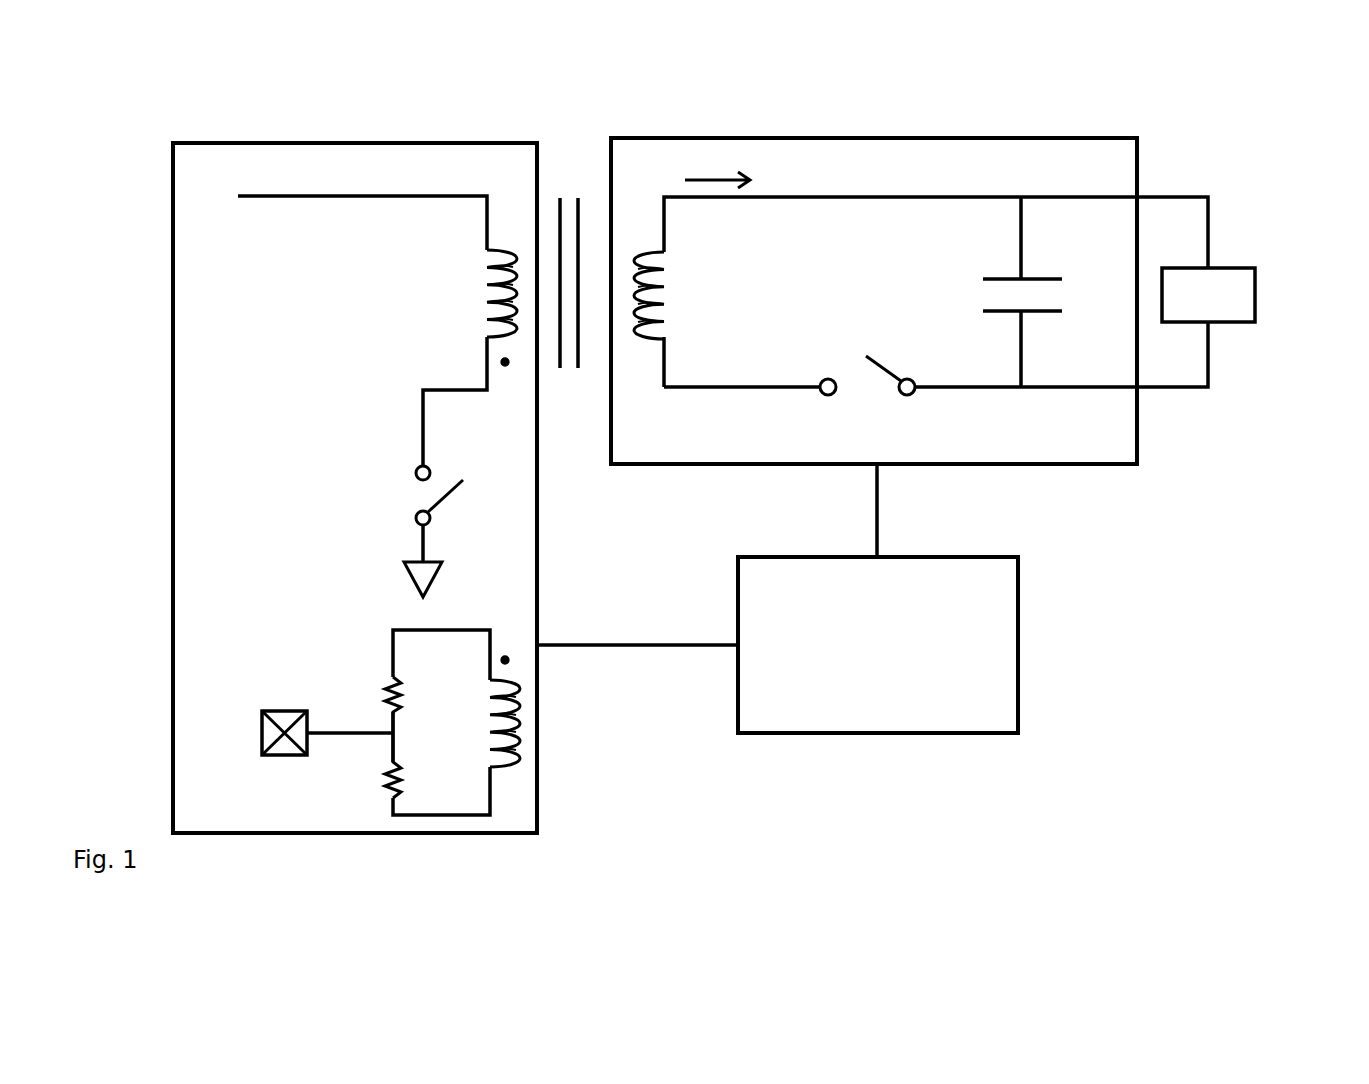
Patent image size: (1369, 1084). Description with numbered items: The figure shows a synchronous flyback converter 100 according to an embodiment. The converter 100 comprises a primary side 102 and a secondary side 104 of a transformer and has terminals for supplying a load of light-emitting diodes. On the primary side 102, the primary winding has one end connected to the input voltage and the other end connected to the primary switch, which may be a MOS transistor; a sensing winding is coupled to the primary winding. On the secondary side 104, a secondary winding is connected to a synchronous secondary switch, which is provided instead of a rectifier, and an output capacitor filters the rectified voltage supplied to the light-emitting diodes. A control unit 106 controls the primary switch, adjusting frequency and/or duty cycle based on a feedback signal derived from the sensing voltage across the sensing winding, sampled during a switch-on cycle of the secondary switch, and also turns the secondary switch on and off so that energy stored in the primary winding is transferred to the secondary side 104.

The synchronous flyback converter 100 is at (1243, 164).
The primary side 102 is at (173, 447).
The secondary side 104 is at (1060, 467).
The control unit 106 is at (1018, 645).